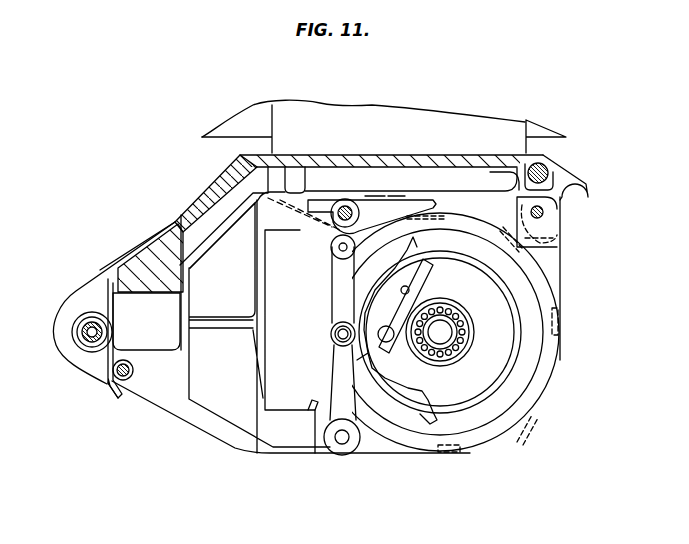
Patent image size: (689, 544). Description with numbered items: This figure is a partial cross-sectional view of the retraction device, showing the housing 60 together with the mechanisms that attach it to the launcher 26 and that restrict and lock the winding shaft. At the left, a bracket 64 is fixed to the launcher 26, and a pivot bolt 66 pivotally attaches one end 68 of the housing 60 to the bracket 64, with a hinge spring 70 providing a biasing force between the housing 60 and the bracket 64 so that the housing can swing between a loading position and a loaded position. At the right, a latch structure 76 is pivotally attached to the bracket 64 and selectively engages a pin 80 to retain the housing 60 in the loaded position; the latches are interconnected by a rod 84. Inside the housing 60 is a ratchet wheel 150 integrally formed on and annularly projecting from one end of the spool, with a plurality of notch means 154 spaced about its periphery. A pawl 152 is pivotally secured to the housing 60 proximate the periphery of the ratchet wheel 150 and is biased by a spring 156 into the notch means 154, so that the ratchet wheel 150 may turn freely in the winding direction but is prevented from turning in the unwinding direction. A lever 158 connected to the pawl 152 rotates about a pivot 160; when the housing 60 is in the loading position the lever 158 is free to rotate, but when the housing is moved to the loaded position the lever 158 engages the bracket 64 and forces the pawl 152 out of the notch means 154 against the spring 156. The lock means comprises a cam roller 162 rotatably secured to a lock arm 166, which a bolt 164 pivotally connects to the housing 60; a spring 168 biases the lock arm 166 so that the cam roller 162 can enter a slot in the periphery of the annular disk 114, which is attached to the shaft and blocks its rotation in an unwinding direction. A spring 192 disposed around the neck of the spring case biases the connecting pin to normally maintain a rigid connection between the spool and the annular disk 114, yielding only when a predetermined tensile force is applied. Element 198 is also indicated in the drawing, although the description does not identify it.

The launcher 26 is at (257, 112).
The housing 60 is at (483, 197).
The bracket 64 is at (213, 185).
The pivot bolt 66 is at (84, 326).
The end of housing 68 is at (117, 257).
The hinge spring 70 is at (112, 394).
The latch structure 76 is at (573, 173).
The pin 80 is at (542, 214).
The rod 84 is at (552, 155).
The annular disk 114 is at (362, 292).
The ratchet wheel 150 is at (545, 397).
The pawl 152 is at (397, 194).
The notch means 154 is at (558, 319).
The spring 156 is at (375, 194).
The lever 158 is at (290, 170).
The pivot 160 is at (345, 199).
The cam roller 162 is at (336, 321).
The bolt 164 is at (347, 442).
The lock arm 166 is at (327, 449).
The spring 168 is at (306, 402).
The spring 192 is at (484, 326).
The hidden edge 198 is at (330, 347).